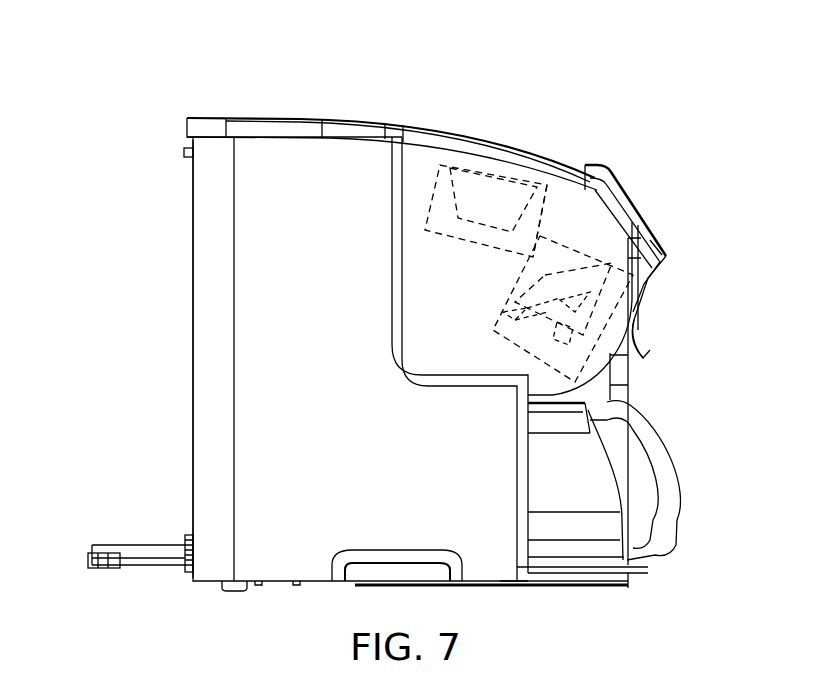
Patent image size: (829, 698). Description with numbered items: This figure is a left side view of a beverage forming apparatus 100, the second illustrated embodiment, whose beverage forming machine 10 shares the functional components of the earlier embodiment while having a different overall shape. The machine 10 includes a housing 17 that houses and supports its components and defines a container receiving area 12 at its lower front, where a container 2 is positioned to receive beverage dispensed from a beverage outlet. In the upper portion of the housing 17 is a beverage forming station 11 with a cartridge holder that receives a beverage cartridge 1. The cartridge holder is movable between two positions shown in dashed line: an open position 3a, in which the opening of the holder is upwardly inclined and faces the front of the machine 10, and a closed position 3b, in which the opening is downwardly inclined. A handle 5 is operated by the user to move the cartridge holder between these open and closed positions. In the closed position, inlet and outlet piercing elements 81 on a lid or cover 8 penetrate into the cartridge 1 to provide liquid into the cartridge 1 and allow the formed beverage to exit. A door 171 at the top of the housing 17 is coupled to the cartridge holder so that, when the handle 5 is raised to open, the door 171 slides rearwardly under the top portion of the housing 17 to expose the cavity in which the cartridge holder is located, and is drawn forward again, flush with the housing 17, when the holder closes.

The beverage forming apparatus 100 is at (158, 95).
The beverage forming machine 10 is at (180, 270).
The housing 17 is at (210, 347).
The door 171 is at (445, 130).
The beverage cartridge 1 is at (490, 195).
The open position of cartridge holder 3a is at (550, 190).
The closed position of cartridge holder 3b is at (560, 254).
The beverage forming station 11 is at (590, 222).
The lid or cover 8 is at (633, 306).
The inlet and outlet piercing elements 81 is at (507, 313).
The handle 5 is at (640, 346).
The container 2 is at (665, 480).
The container receiving area 12 is at (656, 568).